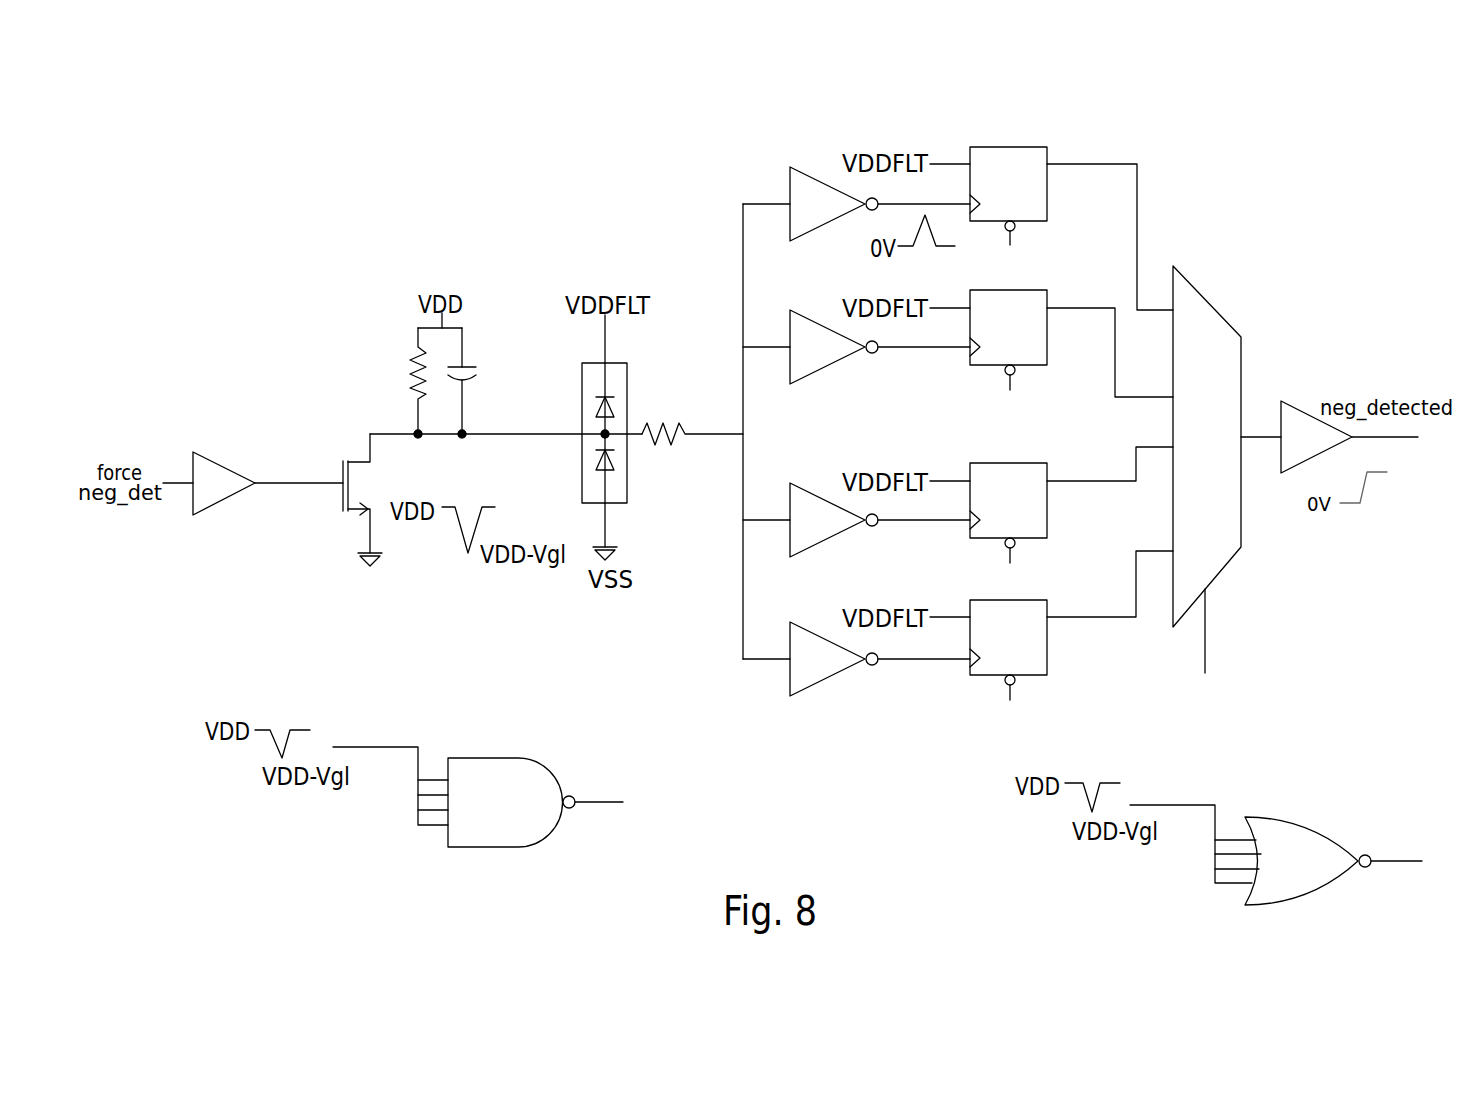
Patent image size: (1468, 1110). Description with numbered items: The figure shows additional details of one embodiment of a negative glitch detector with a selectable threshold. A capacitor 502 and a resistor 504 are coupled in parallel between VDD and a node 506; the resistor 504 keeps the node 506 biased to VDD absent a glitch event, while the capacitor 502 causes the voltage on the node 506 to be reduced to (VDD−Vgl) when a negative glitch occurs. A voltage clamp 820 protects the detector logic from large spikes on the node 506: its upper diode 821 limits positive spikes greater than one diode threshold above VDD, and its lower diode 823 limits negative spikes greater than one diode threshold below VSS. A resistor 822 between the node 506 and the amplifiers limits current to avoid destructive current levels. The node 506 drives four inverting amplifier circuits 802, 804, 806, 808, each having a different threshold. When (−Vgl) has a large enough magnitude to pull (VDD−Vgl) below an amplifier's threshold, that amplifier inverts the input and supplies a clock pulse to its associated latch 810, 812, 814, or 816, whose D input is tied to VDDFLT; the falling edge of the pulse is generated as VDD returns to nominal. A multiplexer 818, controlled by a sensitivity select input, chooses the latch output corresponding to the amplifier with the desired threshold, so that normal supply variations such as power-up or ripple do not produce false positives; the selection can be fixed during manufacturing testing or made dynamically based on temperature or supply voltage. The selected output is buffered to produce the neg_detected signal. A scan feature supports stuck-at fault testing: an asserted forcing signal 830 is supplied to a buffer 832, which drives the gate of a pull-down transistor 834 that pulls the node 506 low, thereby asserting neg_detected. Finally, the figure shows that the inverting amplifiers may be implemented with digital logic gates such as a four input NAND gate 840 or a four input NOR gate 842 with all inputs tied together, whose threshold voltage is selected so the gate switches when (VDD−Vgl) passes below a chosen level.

The capacitor 502 is at (474, 371).
The resistor 504 is at (412, 358).
The node 506 is at (462, 438).
The inverting amplifier circuit 802 is at (806, 170).
The inverting amplifier circuit 804 is at (812, 314).
The inverting amplifier circuit 806 is at (820, 489).
The inverting amplifier circuit 808 is at (814, 627).
The latch 810 is at (1040, 146).
The latch 812 is at (1031, 289).
The latch 814 is at (1031, 462).
The latch 816 is at (1042, 599).
The multiplexer 818 is at (1206, 296).
The voltage clamp 820 is at (595, 433).
The upper diode 821 is at (596, 406).
The resistor 822 is at (684, 426).
The lower diode 823 is at (616, 462).
The forcing signal 830 is at (165, 482).
The buffer 832 is at (230, 498).
The pull-down transistor 834 is at (341, 500).
The four input NAND gate 840 is at (531, 757).
The four input NOR gate 842 is at (1316, 823).